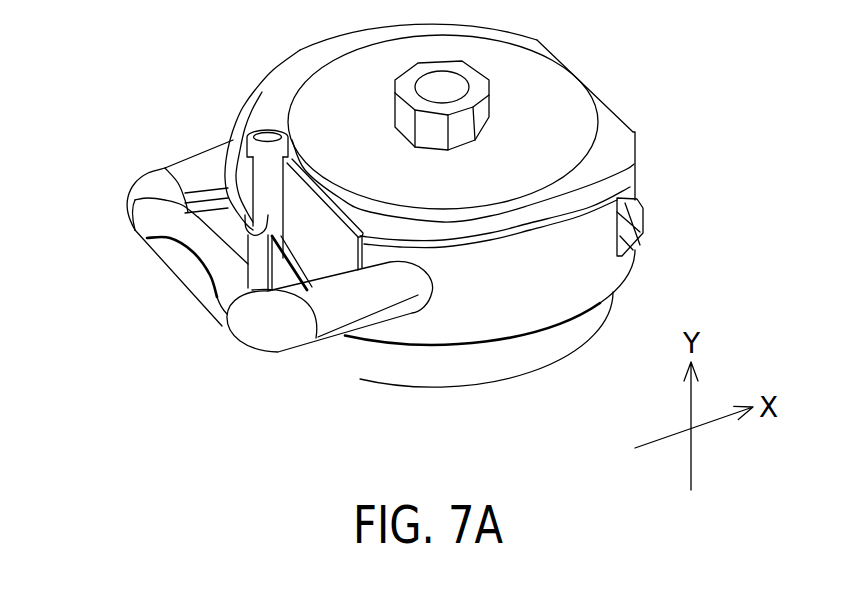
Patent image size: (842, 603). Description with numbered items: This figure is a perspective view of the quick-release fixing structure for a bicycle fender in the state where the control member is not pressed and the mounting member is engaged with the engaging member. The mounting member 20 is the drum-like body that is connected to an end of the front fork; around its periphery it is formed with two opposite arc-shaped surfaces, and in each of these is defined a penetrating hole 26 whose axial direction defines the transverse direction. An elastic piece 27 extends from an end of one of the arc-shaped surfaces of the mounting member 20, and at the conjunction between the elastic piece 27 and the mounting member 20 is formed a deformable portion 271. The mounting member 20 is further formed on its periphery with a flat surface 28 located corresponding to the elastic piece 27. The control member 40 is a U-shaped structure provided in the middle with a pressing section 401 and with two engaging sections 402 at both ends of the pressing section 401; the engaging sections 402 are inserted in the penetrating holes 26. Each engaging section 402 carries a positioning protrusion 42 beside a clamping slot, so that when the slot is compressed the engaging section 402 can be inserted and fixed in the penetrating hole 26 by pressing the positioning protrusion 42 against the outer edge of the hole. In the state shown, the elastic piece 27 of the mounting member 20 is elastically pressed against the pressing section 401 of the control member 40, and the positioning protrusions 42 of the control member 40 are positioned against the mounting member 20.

The mounting member 20 is at (601, 91).
The penetrating hole 26 is at (418, 275).
The elastic piece 27 is at (222, 236).
The deformable portion 271 is at (270, 143).
The flat surface 28 is at (307, 212).
The control member 40 is at (140, 171).
The pressing section 401 is at (220, 272).
The engaging section 402 is at (202, 168).
The positioning protrusion 42 is at (630, 208).